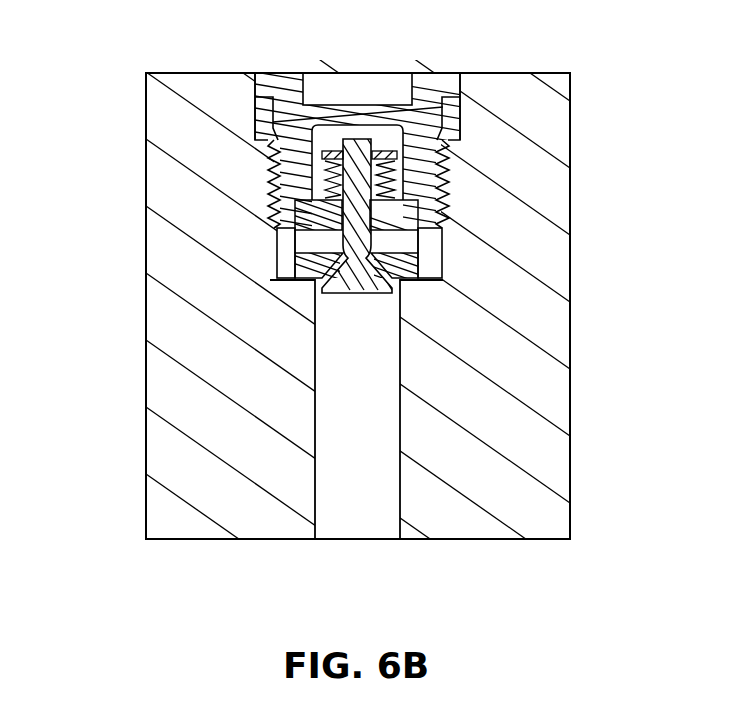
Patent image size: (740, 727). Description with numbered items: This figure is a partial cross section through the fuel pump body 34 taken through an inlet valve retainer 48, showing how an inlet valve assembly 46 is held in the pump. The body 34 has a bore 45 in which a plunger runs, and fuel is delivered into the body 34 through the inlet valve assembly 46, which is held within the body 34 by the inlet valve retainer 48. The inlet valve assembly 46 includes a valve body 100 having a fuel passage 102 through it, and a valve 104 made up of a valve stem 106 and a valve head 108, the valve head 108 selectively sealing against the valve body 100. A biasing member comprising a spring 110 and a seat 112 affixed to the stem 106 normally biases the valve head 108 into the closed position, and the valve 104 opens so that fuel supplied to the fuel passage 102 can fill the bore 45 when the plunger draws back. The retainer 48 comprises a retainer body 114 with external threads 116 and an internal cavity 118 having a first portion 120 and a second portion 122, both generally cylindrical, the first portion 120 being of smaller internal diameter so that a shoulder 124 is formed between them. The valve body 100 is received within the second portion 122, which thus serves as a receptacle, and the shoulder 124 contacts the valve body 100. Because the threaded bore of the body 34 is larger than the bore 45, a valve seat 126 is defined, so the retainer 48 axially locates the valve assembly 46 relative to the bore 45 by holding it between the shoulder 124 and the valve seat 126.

The body 34 is at (548, 401).
The bore 45 is at (358, 380).
The inlet valve assembly 46 is at (428, 258).
The inlet valve retainer 48 is at (440, 67).
The valve body 100 is at (300, 200).
The fuel passage 102 is at (327, 239).
The valve 104 is at (354, 126).
The valve stem 106 is at (445, 193).
The valve head 108 is at (363, 291).
The spring 110 is at (270, 167).
The seat 112 is at (385, 151).
The retainer body 114 is at (257, 140).
The external threads 116 is at (440, 127).
The internal cavity 118 is at (327, 135).
The first portion 120 is at (404, 128).
The second portion 122 is at (398, 199).
The shoulder 124 is at (313, 198).
The valve seat 126 is at (315, 276).